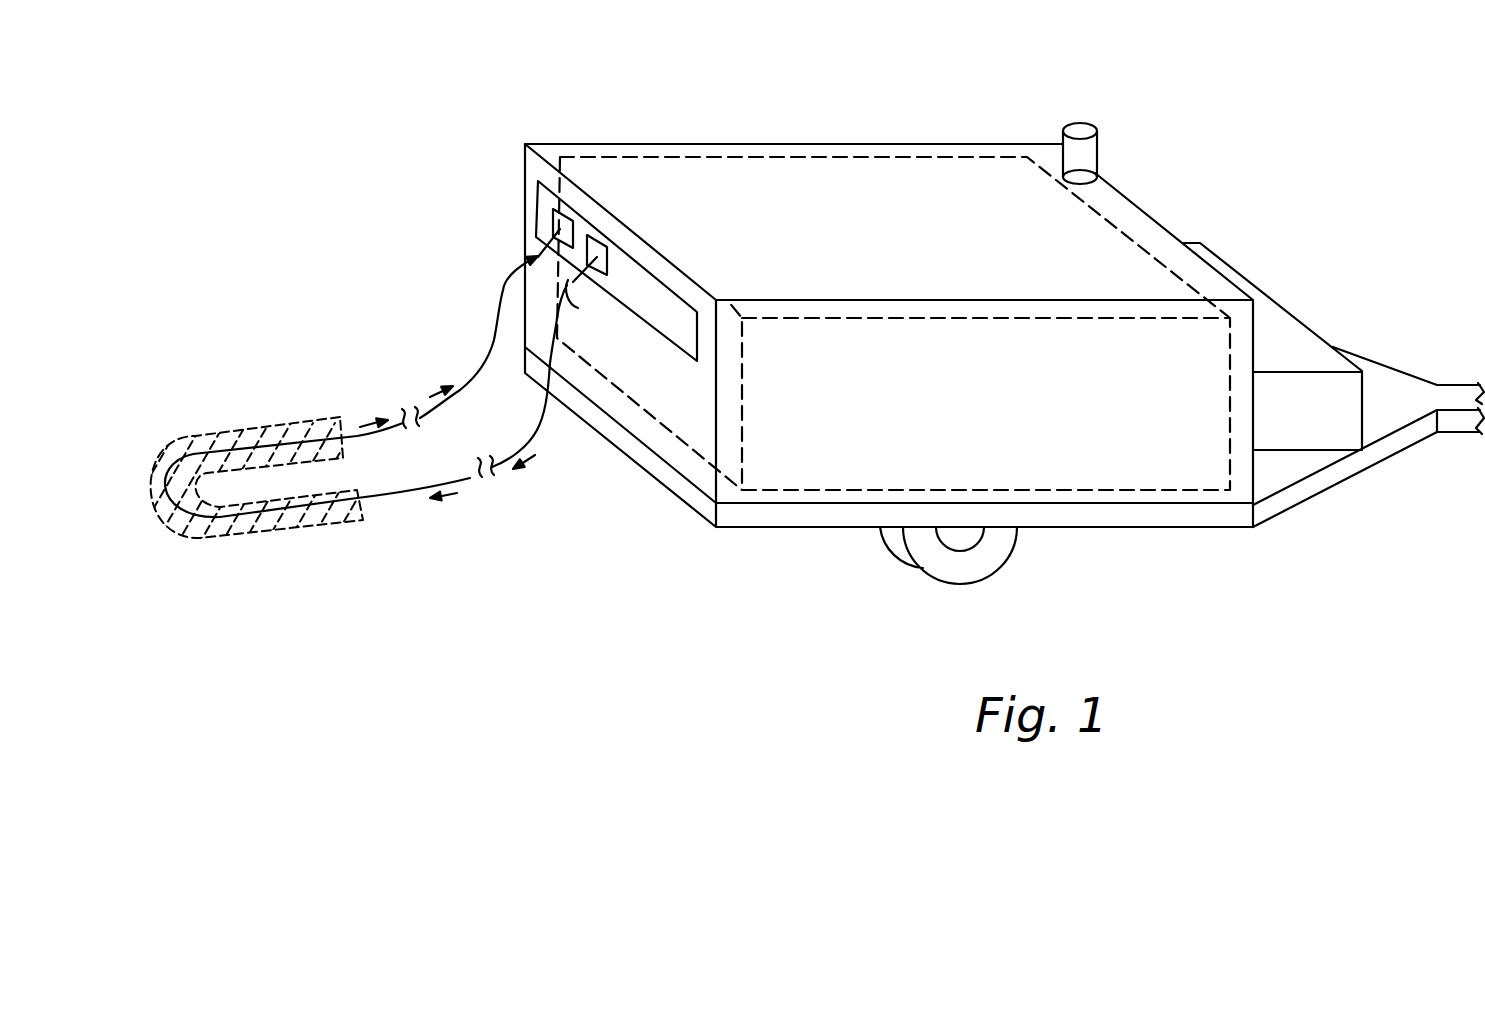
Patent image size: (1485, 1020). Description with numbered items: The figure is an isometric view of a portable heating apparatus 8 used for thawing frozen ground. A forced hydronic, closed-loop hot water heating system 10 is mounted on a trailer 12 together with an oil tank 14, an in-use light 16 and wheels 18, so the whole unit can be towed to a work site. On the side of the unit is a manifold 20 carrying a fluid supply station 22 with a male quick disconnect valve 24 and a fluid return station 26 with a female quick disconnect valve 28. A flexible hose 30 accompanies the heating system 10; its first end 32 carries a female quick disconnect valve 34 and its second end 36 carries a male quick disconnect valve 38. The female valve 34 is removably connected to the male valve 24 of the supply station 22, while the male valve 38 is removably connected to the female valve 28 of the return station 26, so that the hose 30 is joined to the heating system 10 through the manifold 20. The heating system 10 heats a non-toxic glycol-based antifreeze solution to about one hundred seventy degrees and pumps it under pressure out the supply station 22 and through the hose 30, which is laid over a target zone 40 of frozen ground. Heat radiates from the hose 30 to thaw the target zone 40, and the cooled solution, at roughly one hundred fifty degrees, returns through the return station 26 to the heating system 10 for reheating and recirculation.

The portable heating apparatus 8 is at (936, 105).
The forced hydronic heating system 10 is at (996, 414).
The trailer 12 is at (1129, 532).
The oil tank 14 is at (1287, 322).
The in-use light 16 is at (1099, 143).
The wheels 18 is at (932, 577).
The manifold 20 is at (663, 282).
The fluid supply station 22 is at (607, 258).
The male quick disconnect valve 24 is at (604, 296).
The fluid return station 26 is at (553, 210).
The female quick disconnect valve 28 is at (542, 250).
The hose 30 is at (402, 491).
The first end 32 is at (557, 322).
The female quick disconnect valve 34 is at (585, 303).
The second end 36 is at (498, 302).
The male quick disconnect valve 38 is at (528, 259).
The target zone 40 is at (228, 535).